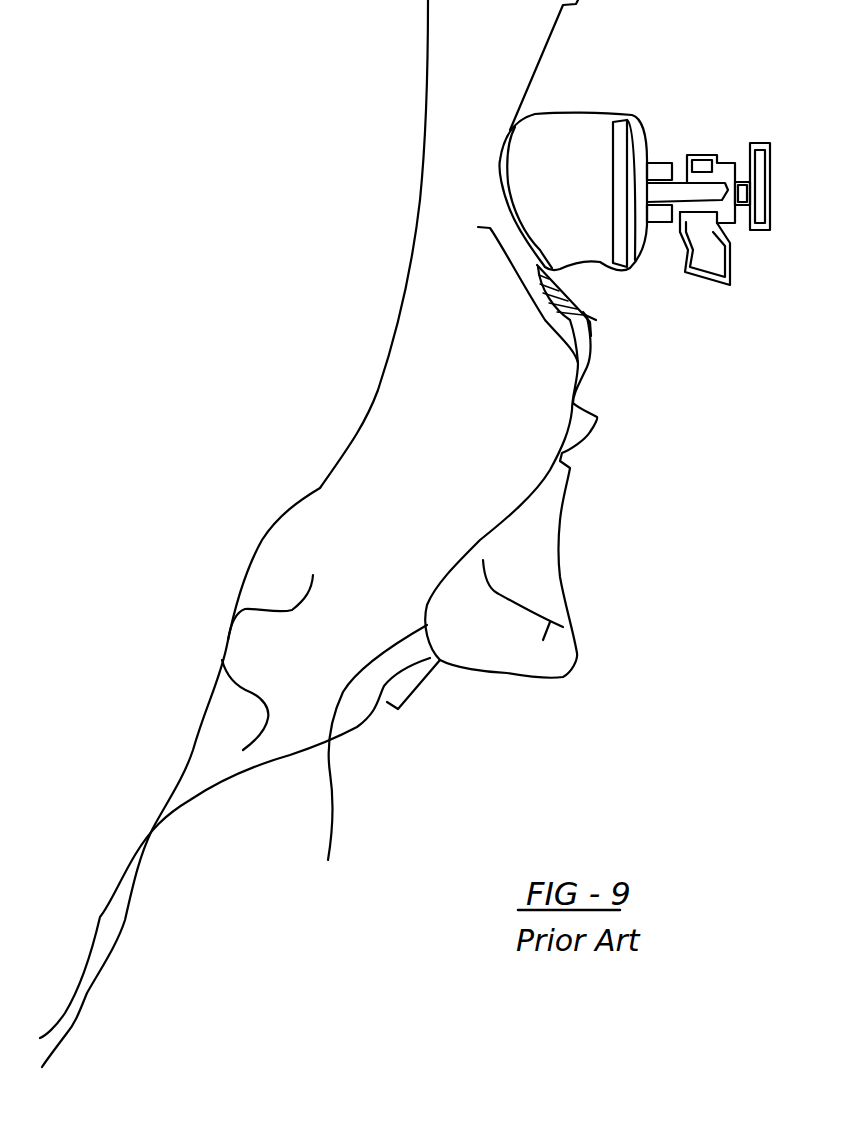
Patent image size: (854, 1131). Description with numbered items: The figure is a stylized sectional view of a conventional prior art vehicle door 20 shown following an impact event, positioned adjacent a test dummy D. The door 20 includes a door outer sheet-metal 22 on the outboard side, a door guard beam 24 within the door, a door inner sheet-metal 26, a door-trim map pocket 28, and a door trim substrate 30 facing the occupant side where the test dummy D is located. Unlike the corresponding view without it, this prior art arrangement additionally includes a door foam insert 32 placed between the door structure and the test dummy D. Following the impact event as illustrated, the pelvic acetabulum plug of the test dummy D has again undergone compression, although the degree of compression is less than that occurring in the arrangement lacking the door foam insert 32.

The vehicle door 20 is at (280, 323).
The door outer sheet-metal 22 is at (288, 505).
The door guard beam 24 is at (240, 688).
The door inner sheet-metal 26 is at (367, 755).
The door-trim map pocket 28 is at (513, 603).
The door trim substrate 30 is at (560, 557).
The door foam insert 32 is at (563, 295).
The test dummy D is at (588, 153).